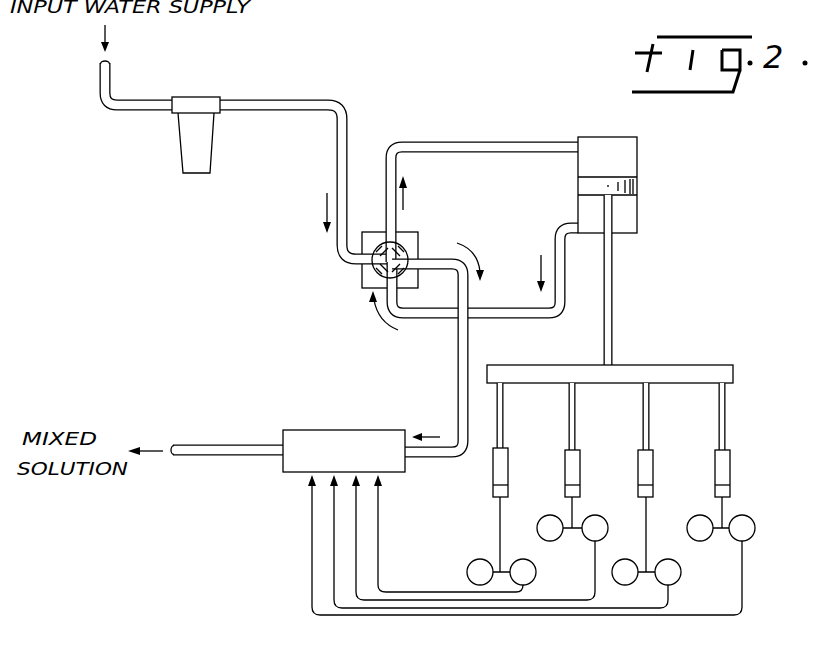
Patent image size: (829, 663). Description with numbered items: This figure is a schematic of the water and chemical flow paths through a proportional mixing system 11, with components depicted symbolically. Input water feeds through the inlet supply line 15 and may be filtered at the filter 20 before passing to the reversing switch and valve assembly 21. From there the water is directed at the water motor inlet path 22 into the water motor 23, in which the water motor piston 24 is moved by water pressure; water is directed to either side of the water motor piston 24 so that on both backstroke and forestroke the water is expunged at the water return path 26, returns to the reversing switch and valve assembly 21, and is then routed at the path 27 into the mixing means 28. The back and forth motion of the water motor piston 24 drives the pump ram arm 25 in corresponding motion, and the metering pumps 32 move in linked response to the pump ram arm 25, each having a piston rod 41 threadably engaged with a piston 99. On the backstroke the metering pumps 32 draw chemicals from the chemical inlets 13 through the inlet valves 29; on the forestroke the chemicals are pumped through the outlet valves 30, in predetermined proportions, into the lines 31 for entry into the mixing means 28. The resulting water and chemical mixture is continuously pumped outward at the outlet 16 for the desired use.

The fluid mixing system 11 is at (420, 4).
The chemical inlets 13 is at (480, 548).
The inlet supply line 15 is at (113, 77).
The outlet 16 is at (230, 444).
The filter 20 is at (185, 150).
The reversing switch and valve assembly 21 is at (390, 260).
The water motor inlet path 22 is at (522, 118).
The water motor 23 is at (637, 152).
The water motor piston 24 is at (638, 188).
The pump ram arm 25 is at (680, 368).
The water return path 26 is at (556, 230).
The water routing path to mixing means 27 is at (458, 382).
The mixing means 28 is at (363, 413).
The inlet valves 29 is at (467, 570).
The outlet valves 30 is at (537, 573).
The lines 31 is at (334, 533).
The metering pumps 32 is at (486, 472).
The piston rod 41 is at (570, 398).
The piston 99 is at (564, 450).